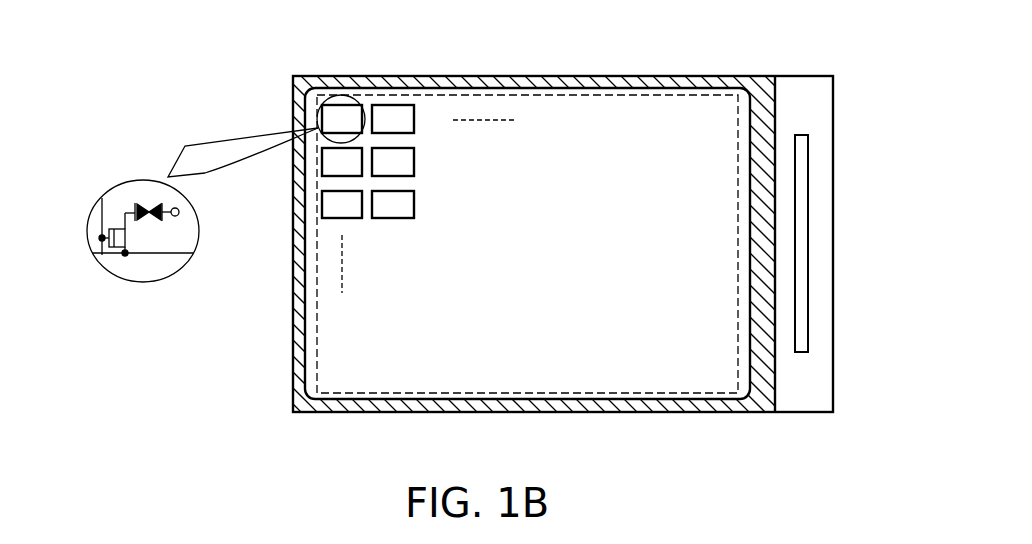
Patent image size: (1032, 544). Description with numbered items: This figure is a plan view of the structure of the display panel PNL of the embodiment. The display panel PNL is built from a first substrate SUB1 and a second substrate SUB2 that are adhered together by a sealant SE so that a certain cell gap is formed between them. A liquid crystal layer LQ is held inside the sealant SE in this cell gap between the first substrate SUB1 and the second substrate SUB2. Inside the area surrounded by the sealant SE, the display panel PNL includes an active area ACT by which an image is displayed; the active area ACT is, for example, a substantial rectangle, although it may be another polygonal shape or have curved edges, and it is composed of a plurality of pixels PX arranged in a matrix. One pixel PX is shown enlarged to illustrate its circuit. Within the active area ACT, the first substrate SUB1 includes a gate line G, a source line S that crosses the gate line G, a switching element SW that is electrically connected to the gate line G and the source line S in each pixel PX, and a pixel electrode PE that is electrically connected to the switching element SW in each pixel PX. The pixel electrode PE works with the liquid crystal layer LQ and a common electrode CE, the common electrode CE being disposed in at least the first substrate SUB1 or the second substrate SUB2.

The display panel PNL is at (825, 76).
The first substrate SUB1 is at (806, 392).
The second substrate SUB2 is at (714, 380).
The sealant SE is at (580, 76).
The active area ACT is at (632, 393).
The pixel PX is at (341, 105).
The gate line G is at (102, 220).
The source line S is at (150, 254).
The switching element SW is at (132, 236).
The pixel electrode PE is at (132, 206).
The liquid crystal layer LQ is at (148, 207).
The common electrode CE is at (182, 216).